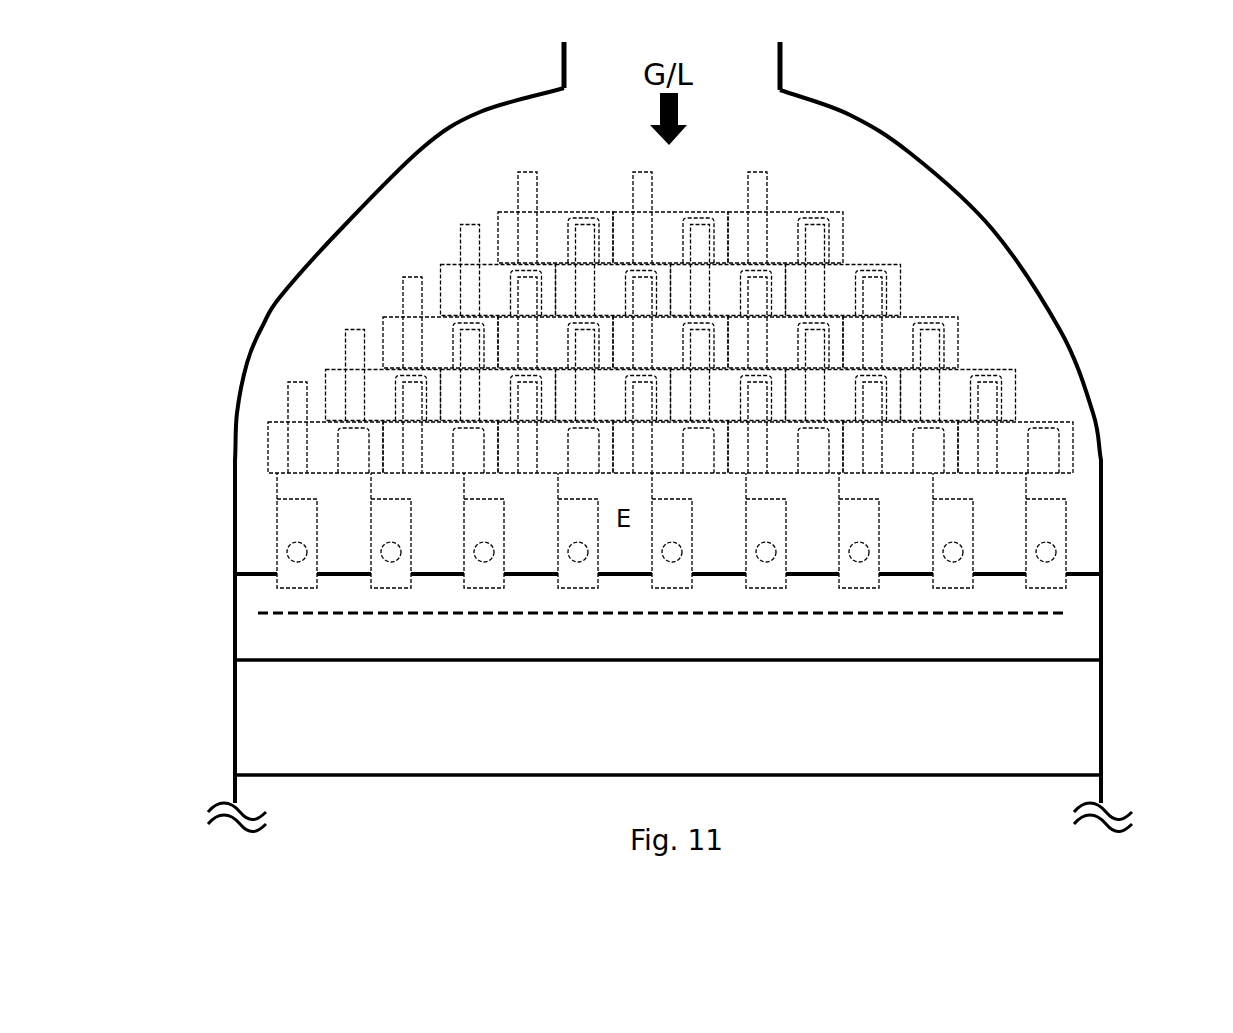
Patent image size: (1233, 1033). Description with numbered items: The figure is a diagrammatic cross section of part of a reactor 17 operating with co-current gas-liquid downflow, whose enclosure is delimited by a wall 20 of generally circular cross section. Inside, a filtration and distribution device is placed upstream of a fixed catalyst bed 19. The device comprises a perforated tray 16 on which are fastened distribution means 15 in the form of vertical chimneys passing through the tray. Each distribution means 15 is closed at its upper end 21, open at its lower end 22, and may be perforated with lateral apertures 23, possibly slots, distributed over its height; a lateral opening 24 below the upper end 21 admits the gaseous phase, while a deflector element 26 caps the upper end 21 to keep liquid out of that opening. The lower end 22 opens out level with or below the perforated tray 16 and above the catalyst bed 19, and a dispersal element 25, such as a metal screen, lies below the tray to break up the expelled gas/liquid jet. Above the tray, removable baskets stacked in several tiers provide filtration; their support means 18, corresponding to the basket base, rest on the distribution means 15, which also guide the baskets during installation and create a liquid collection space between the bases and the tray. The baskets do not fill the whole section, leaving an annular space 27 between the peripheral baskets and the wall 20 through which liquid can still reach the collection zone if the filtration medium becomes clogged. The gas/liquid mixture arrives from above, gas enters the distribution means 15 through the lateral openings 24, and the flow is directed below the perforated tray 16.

The reactor 17 is at (950, 135).
The support means 18 is at (258, 465).
The annular space 27 is at (1085, 430).
The distribution means 15 is at (272, 553).
The lateral opening 24 is at (307, 483).
The deflector element 26 is at (742, 477).
The lateral apertures 23 is at (860, 565).
The lower end 22 is at (952, 590).
The upper end 21 is at (1063, 480).
The perforated tray 16 is at (537, 580).
The dispersal element 25 is at (459, 617).
The fixed catalyst bed 19 is at (262, 707).
The wall 20 is at (1108, 690).